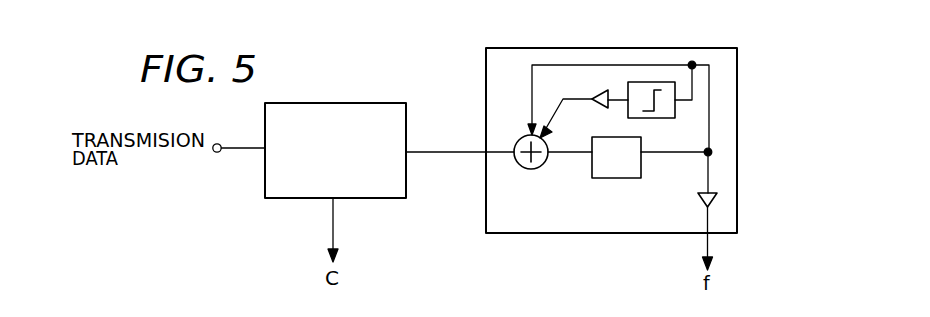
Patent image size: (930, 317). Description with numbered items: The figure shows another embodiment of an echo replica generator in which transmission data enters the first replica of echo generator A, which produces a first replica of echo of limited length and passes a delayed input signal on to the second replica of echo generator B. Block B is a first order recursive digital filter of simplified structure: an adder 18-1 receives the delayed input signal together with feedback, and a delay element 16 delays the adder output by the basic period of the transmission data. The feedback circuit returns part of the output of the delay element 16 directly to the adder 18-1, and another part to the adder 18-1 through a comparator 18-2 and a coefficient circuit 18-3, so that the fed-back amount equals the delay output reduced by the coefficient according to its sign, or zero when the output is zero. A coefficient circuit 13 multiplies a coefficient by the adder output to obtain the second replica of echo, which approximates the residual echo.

The first replica of echo generator A is at (383, 103).
The second replica of echo generator B is at (695, 48).
The adder 18-1 is at (530, 171).
The comparator 18-2 is at (677, 113).
The coefficient circuit 18-3 is at (594, 106).
The delay element 16 is at (609, 179).
The coefficient circuit 13 is at (699, 201).